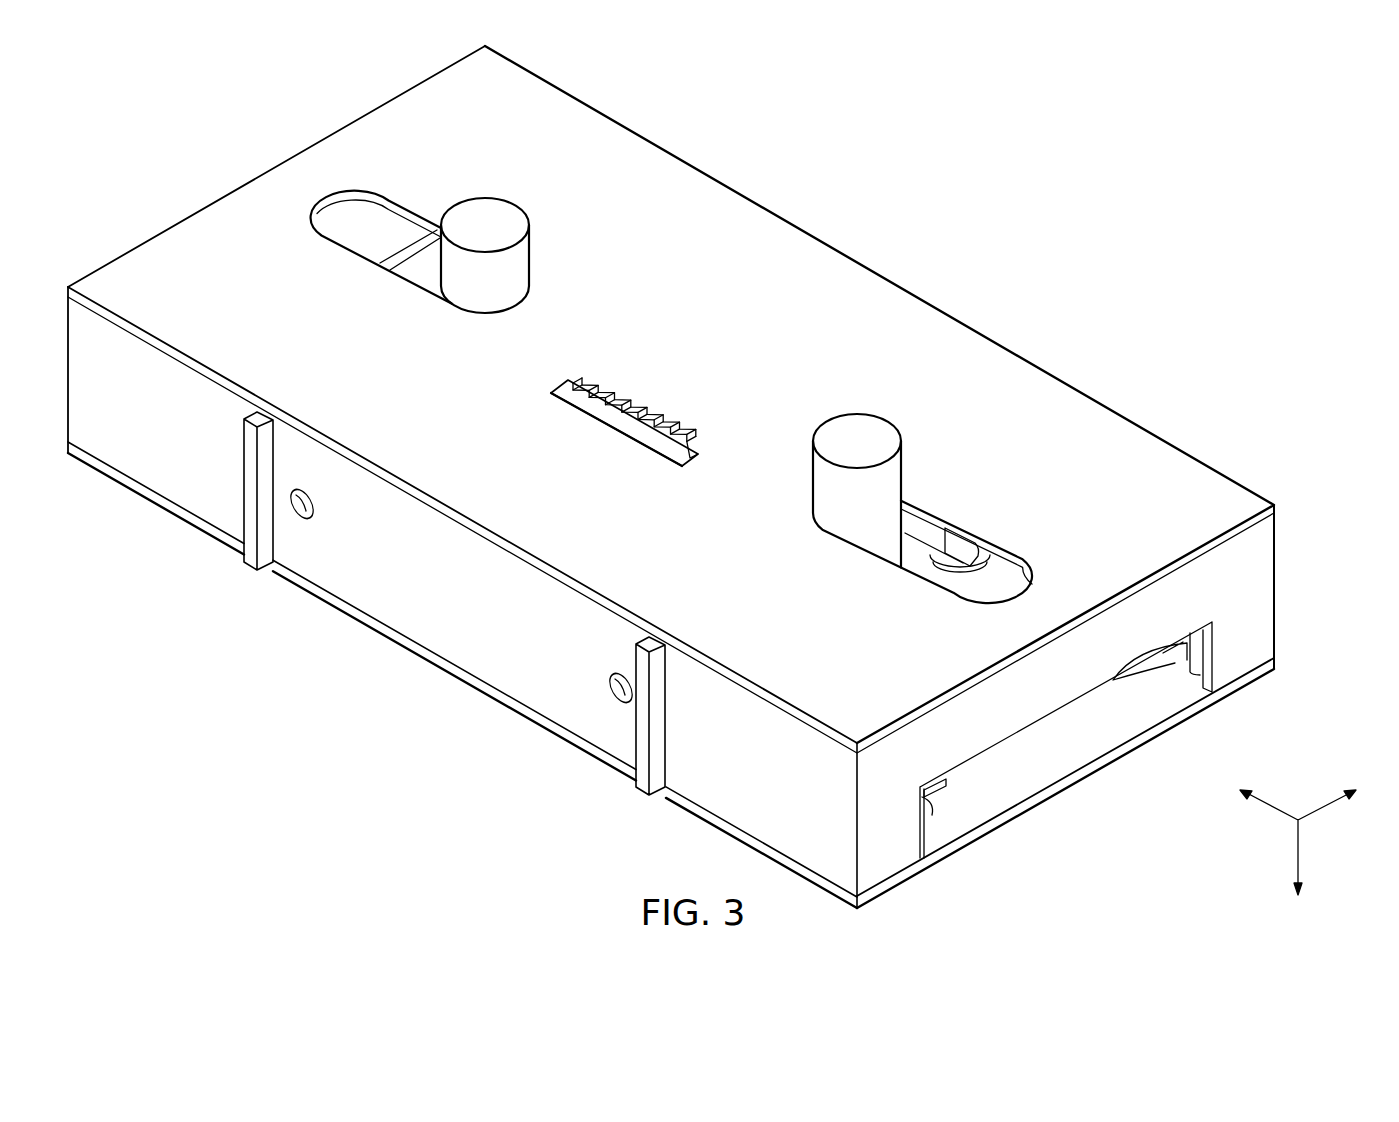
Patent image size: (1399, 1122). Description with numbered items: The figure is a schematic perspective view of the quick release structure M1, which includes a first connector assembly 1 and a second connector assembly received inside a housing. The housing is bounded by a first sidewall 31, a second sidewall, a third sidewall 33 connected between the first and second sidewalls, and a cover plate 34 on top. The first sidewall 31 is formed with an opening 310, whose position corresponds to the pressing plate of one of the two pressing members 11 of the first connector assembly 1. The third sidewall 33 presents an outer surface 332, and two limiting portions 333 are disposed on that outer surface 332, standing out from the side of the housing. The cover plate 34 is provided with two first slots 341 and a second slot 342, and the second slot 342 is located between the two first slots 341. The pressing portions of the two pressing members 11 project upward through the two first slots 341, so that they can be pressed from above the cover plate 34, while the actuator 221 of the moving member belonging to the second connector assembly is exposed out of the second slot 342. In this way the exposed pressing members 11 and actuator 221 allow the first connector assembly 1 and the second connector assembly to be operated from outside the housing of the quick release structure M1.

The quick release structure M1 is at (1164, 316).
The first connector assembly 1 is at (795, 283).
The pressing members 11 is at (526, 214).
The first sidewall 31 is at (1248, 598).
The opening 310 is at (1078, 742).
The third sidewall 33 is at (100, 378).
The outer surface 332 is at (446, 622).
The limiting portions 333 is at (250, 506).
The cover plate 34 is at (975, 357).
The first slots 341 is at (382, 225).
The second slot 342 is at (694, 452).
The actuator 221 is at (630, 394).